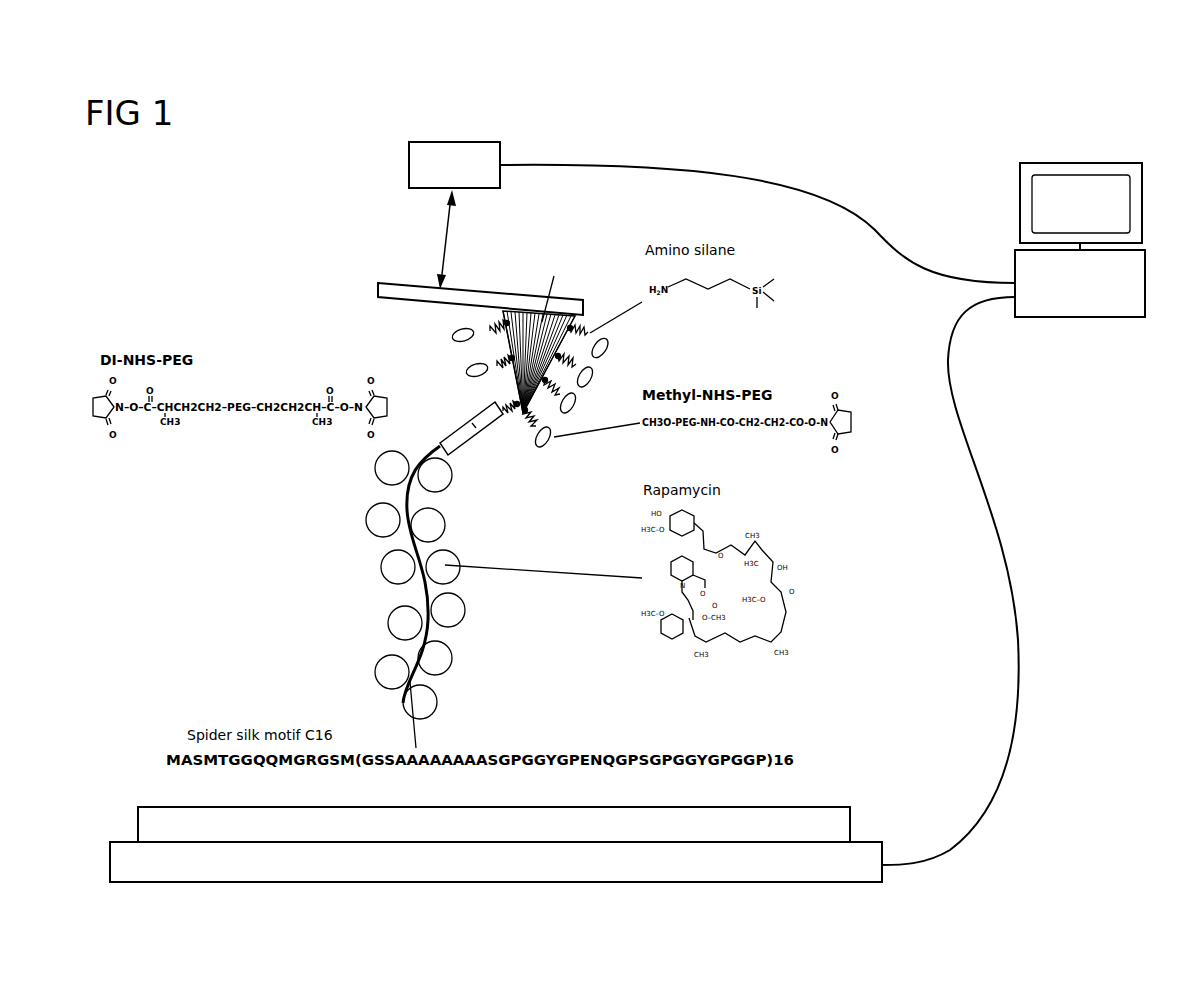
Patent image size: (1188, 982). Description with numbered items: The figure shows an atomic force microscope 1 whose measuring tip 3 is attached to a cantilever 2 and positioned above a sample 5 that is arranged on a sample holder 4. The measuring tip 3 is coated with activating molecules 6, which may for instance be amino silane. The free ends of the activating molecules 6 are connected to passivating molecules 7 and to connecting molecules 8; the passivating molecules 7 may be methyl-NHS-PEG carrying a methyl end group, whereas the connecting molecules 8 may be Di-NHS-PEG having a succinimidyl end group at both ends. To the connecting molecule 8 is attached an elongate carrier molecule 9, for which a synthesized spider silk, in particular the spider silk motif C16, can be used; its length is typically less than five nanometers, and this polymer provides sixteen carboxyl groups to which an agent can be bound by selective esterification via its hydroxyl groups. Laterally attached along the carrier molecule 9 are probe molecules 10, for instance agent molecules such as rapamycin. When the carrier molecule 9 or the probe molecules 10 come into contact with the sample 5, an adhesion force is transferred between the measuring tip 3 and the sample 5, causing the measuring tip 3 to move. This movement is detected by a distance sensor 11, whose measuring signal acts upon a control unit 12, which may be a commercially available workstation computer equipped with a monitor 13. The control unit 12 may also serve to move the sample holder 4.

The atomic force microscope 1 is at (926, 158).
The cantilever 2 is at (378, 297).
The measuring tip 3 is at (533, 313).
The sample holder 4 is at (120, 864).
The sample 5 is at (150, 822).
The activating molecules 6 is at (590, 330).
The passivating molecules 7 is at (608, 352).
The connecting molecules 8 is at (478, 438).
The carrier molecule 9 is at (425, 602).
The probe molecules 10 is at (452, 657).
The distance sensor 11 is at (409, 168).
The control unit 12 is at (1070, 318).
The monitor 13 is at (1085, 162).